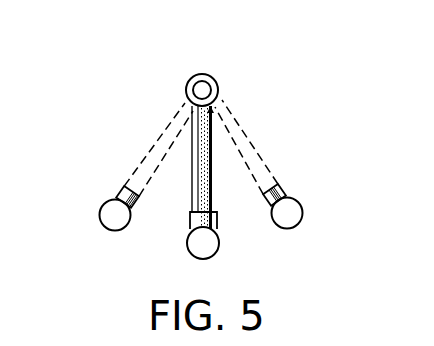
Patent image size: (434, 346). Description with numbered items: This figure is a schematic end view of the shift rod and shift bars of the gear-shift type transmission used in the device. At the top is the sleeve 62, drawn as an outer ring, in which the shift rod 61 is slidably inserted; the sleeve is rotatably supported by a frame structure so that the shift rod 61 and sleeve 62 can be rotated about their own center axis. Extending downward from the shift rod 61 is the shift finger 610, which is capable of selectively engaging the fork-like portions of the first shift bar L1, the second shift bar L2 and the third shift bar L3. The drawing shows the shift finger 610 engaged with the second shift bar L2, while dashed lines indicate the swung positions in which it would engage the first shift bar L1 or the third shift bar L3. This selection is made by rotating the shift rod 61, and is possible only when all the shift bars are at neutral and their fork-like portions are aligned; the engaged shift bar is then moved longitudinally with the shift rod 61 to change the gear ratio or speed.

The sleeve 62 is at (192, 77).
The shift rod 61 is at (209, 86).
The shift finger 610 is at (213, 150).
The first shift bar L1 is at (302, 217).
The second shift bar L2 is at (214, 254).
The third shift bar L3 is at (105, 228).